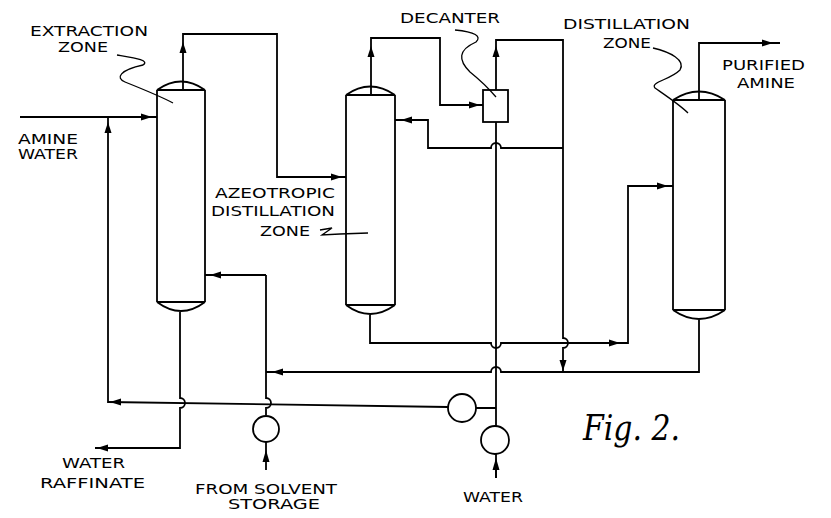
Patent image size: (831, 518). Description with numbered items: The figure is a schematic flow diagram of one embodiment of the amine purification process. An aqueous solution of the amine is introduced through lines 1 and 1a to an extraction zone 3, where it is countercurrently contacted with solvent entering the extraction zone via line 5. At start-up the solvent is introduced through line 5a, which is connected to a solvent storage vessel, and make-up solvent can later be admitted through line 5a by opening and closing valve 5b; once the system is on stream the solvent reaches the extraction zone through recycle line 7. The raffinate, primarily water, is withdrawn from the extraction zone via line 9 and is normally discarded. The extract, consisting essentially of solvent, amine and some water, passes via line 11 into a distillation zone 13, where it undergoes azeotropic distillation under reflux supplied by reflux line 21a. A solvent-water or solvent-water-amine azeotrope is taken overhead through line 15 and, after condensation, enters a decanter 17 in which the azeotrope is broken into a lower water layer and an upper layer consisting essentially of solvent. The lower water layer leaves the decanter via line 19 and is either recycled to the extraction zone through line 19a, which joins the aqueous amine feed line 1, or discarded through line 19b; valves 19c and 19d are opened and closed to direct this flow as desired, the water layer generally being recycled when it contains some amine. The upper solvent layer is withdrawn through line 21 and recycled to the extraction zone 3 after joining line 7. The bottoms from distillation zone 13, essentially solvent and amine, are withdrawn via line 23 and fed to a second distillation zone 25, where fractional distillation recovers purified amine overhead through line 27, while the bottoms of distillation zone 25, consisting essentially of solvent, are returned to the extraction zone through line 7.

The line 1 is at (49, 114).
The line 1a is at (128, 120).
The extraction zone 3 is at (193, 153).
The line 5 is at (245, 277).
The line 5a is at (262, 465).
The valve 5b is at (279, 429).
The recycle line 7 is at (352, 373).
The line 9 is at (182, 357).
The line 11 is at (278, 78).
The distillation zone 13 is at (385, 209).
The line 15 is at (410, 39).
The decanter 17 is at (508, 106).
The line 19 is at (496, 220).
The line 19a is at (374, 409).
The line 19b is at (498, 462).
The valve 19c is at (458, 418).
The valve 19d is at (507, 440).
The line 21 is at (533, 30).
The reflux line 21a is at (474, 150).
The line 23 is at (445, 342).
The second distillation zone 25 is at (720, 242).
The line 27 is at (734, 43).